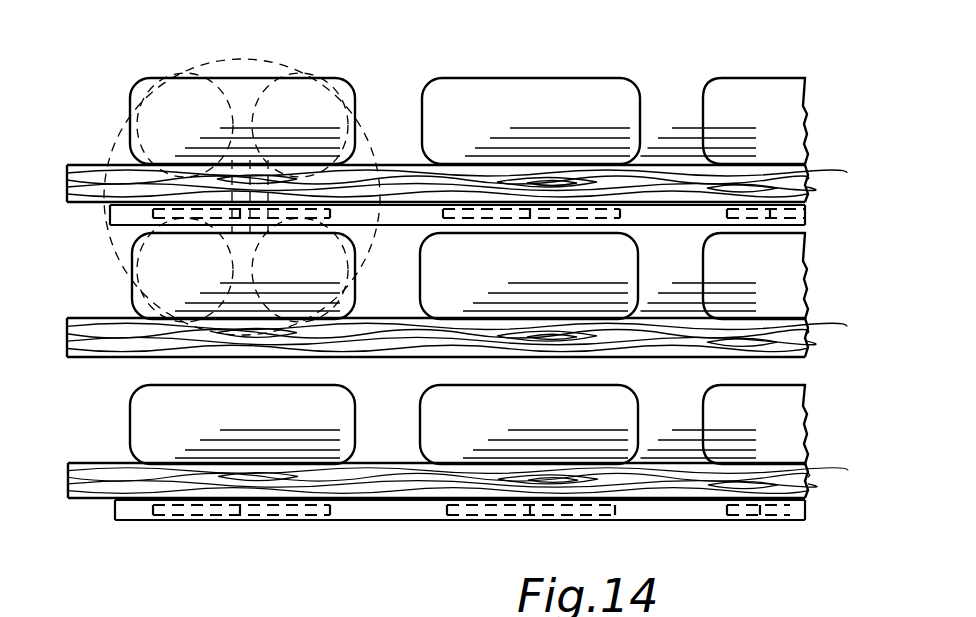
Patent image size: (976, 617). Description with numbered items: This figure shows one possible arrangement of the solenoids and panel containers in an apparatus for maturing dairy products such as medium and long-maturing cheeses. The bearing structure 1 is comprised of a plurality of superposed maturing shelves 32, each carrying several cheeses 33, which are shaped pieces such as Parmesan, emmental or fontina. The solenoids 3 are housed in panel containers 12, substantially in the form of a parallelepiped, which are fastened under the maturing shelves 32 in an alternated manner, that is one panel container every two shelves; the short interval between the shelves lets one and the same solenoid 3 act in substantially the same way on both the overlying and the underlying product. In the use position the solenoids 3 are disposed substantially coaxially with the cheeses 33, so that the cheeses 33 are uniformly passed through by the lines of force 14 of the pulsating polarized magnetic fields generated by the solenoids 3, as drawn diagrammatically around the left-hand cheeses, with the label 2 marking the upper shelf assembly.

The bearing structure 1 is at (91, 520).
The upper laminated flooring assembly 2 is at (680, 70).
The solenoid 3 is at (620, 213).
The panel container 12 is at (398, 238).
The lines of force 14 is at (170, 97).
The maturing shelf 32 is at (658, 165).
The cheese 33 is at (307, 86).